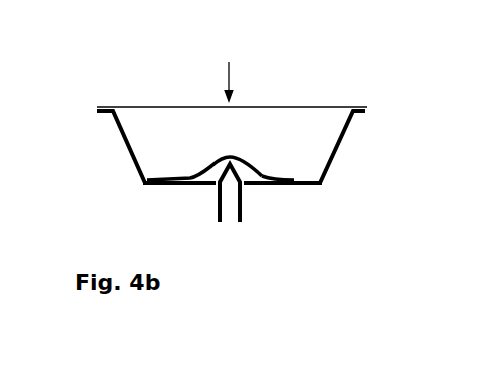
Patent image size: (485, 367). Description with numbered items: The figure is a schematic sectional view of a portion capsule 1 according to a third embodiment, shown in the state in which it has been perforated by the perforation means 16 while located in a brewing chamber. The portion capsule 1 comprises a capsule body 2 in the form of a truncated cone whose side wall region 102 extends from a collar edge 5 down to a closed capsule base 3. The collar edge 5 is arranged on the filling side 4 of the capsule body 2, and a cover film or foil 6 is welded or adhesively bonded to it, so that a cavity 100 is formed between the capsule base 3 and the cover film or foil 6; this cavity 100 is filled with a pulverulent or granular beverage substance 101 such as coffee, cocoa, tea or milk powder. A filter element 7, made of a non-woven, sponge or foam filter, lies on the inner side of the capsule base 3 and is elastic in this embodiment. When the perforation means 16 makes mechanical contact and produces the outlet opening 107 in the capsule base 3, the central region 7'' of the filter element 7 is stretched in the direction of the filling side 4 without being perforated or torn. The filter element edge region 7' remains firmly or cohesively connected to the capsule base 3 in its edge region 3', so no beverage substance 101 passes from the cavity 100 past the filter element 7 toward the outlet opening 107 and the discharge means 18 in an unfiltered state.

The portion capsule 1 is at (132, 78).
The cavity 100 is at (214, 131).
The beverage substance 101 is at (187, 116).
The capsule body 2 is at (92, 152).
The side wall region 102 is at (125, 145).
The capsule base 3 is at (212, 214).
The edge region of the capsule base 3' is at (159, 214).
The filling side 4 is at (228, 71).
The collar edge 5 is at (356, 114).
The cover film or foil 6 is at (308, 107).
The filter element 7 is at (219, 98).
The filter element edge region 7' is at (182, 98).
The central region of the filter element 7'' is at (260, 96).
The perforation means 16 is at (232, 205).
The discharge means 18 is at (237, 215).
The outlet opening 107 is at (216, 190).